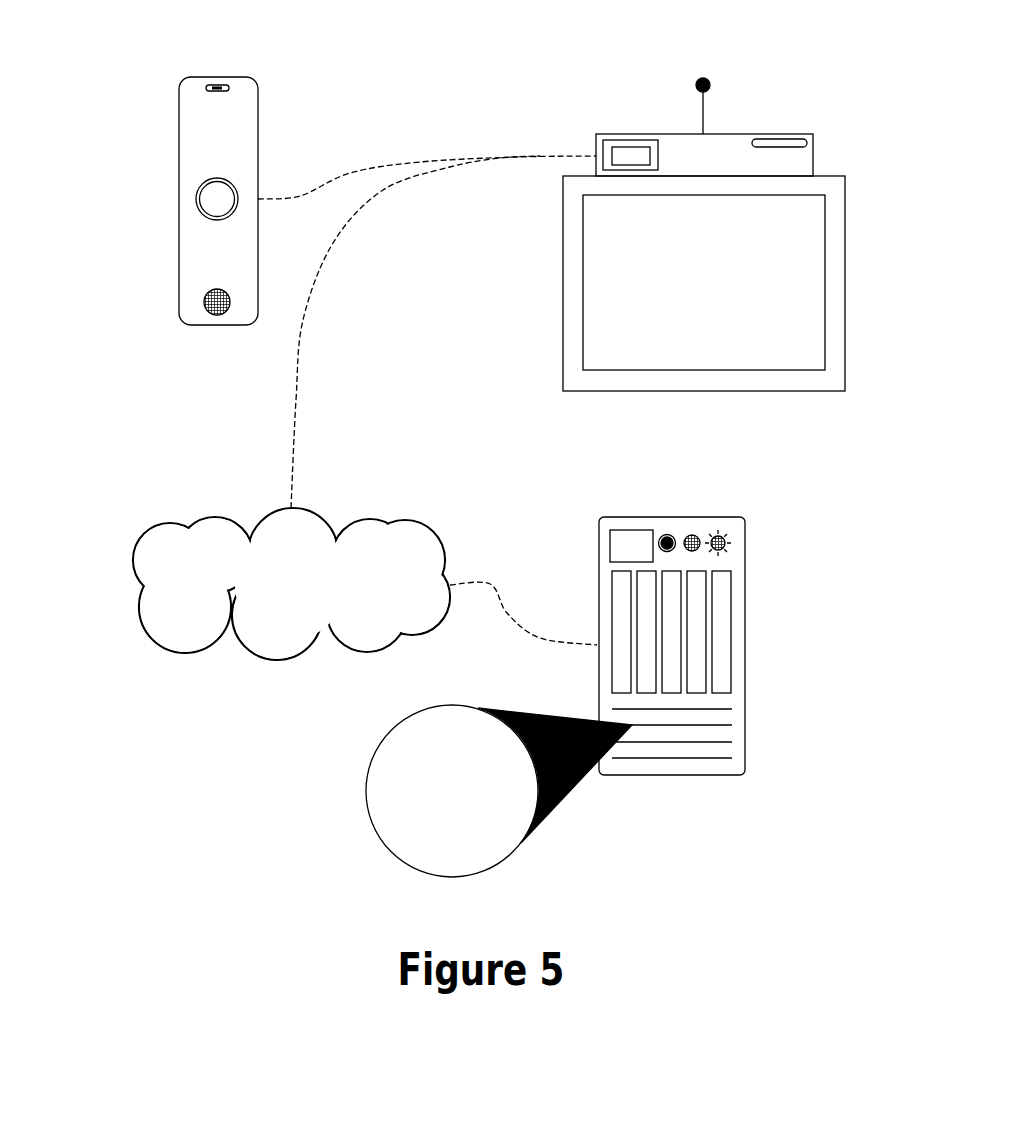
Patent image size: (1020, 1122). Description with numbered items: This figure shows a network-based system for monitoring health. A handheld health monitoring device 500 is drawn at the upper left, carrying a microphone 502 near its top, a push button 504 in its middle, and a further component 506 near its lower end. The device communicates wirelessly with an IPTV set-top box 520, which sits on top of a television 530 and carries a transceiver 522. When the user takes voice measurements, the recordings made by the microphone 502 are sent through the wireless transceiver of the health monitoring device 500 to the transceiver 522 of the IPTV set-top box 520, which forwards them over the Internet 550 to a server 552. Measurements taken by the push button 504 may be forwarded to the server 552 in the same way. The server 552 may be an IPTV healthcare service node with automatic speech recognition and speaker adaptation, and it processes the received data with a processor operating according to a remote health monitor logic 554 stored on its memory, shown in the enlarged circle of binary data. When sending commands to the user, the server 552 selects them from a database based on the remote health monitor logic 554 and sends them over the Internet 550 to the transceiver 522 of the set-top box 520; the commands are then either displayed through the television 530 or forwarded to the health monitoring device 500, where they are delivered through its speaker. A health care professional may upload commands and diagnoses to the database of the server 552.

The health monitoring device 500 is at (183, 80).
The microphone 502 is at (223, 88).
The push button 504 is at (207, 182).
The microphone 506 is at (208, 313).
The IPTV set-top box 520 is at (663, 133).
The transceiver 522 is at (708, 77).
The television 530 is at (778, 391).
The Internet 550 is at (318, 512).
The server 552 is at (658, 517).
The remote health monitor logic 554 is at (400, 792).